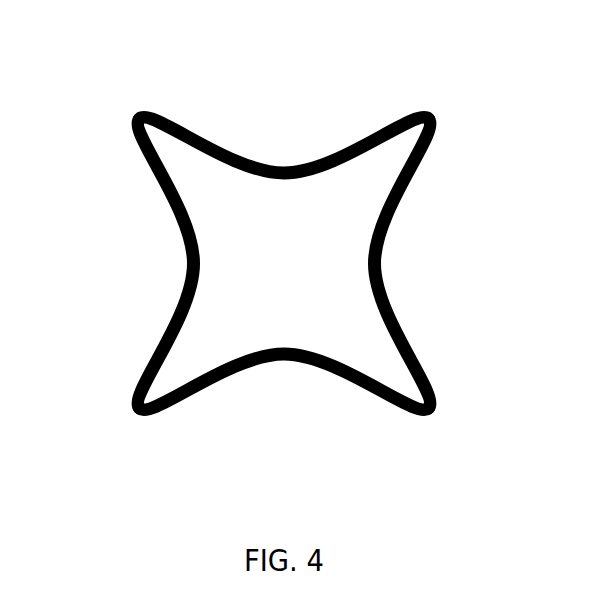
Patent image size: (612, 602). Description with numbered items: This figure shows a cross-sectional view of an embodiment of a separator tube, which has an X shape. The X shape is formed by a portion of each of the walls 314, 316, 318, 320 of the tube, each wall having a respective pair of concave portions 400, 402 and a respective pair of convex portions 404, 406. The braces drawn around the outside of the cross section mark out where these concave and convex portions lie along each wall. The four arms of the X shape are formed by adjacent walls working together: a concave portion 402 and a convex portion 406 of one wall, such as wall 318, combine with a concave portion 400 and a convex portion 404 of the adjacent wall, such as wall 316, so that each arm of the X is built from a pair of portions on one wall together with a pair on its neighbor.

The wall 314 is at (351, 167).
The wall 316 is at (369, 285).
The wall 318 is at (263, 348).
The wall 320 is at (188, 206).
The concave portion 400 is at (193, 442).
The concave portion 402 is at (193, 85).
The convex portion 404 is at (140, 442).
The convex portion 406 is at (140, 85).